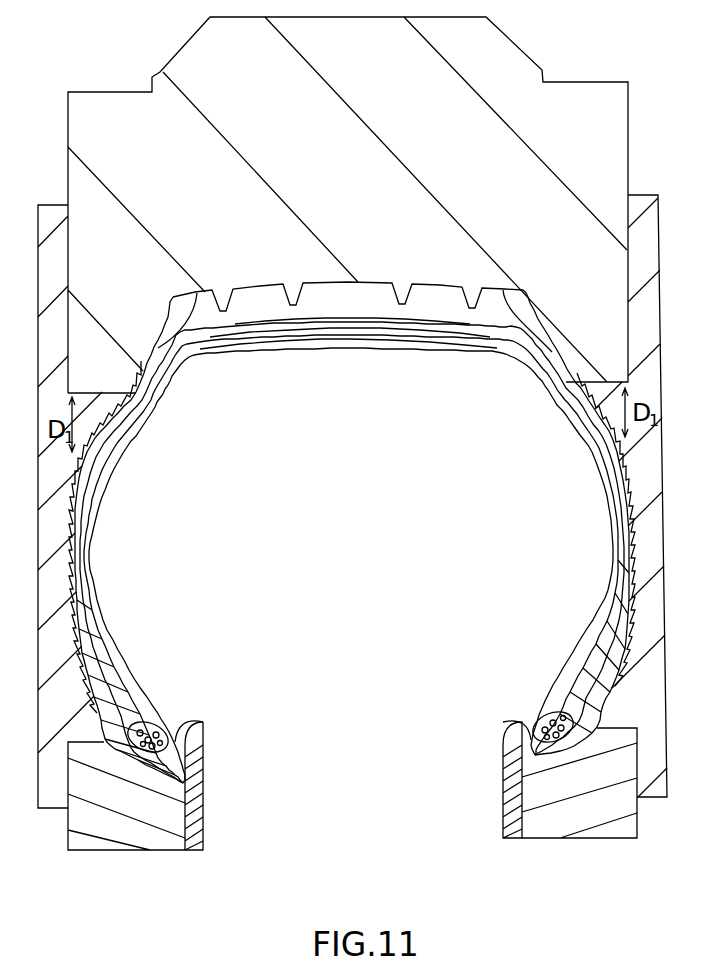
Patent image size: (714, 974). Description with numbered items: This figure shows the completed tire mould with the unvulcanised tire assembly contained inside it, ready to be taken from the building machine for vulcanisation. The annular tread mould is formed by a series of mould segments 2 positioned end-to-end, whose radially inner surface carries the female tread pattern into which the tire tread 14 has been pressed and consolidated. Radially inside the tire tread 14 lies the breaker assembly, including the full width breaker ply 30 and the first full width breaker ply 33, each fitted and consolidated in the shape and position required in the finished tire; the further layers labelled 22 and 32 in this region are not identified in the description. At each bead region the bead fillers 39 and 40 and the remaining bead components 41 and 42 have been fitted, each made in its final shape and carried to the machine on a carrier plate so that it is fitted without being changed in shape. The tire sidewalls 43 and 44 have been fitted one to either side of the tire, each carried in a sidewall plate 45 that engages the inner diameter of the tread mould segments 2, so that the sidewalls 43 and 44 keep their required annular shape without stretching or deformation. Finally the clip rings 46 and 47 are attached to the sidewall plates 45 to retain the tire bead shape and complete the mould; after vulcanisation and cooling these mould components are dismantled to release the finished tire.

The mould segment 2 is at (351, 365).
The tire tread 14 is at (242, 322).
The carcass ply 22 is at (335, 322).
The breaker ply 30 is at (353, 328).
The carcass ply 32 is at (402, 332).
The first full width breaker ply 33 is at (460, 341).
The bead filler 39 is at (98, 693).
The bead filler 40 is at (604, 692).
The bead component 41 is at (178, 740).
The bead component 42 is at (184, 776).
The tire sidewall 43 is at (76, 543).
The tire sidewall 44 is at (626, 583).
The sidewall plate 45 is at (52, 220).
The clip ring 46 is at (139, 838).
The clip ring 47 is at (203, 794).